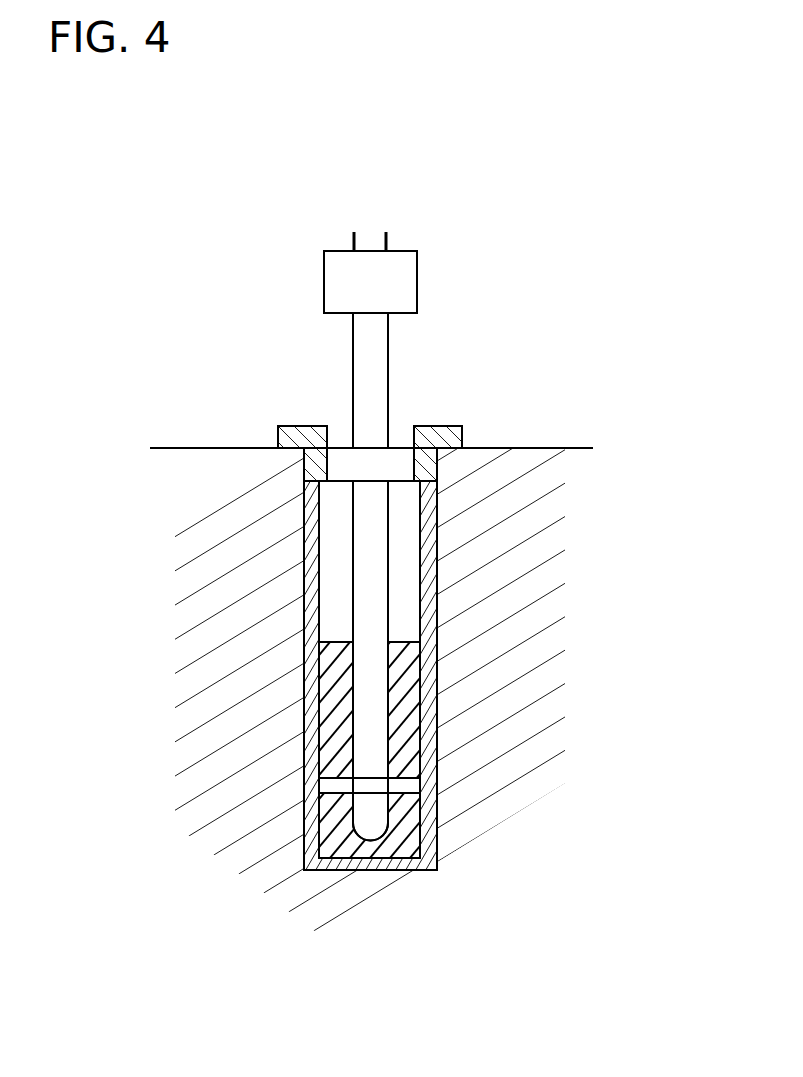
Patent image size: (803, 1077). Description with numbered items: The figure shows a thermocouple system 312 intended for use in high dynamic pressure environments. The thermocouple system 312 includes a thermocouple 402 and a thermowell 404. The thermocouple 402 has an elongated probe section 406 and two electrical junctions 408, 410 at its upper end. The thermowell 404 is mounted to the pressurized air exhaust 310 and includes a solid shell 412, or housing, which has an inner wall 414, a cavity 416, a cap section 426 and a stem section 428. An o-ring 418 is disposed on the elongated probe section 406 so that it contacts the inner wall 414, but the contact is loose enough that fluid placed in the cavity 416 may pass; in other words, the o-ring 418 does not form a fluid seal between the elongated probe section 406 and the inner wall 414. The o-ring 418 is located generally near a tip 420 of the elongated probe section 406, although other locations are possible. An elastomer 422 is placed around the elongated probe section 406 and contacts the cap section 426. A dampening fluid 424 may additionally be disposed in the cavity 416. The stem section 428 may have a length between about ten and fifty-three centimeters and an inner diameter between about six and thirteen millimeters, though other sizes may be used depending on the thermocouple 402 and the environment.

The thermocouple system 312 is at (107, 193).
The pressurized air exhaust 310 is at (193, 448).
The thermocouple 402 is at (402, 342).
The thermowell 404 is at (468, 600).
The elongated probe section 406 is at (368, 623).
The electrical junction 408 is at (353, 233).
The electrical junction 410 is at (388, 237).
The solid shell 412 is at (320, 545).
The inner wall 414 is at (415, 548).
The cavity 416 is at (410, 578).
The o-ring 418 is at (343, 795).
The tip 420 is at (373, 825).
The elastomer 422 is at (398, 450).
The dampening fluid 424 is at (407, 720).
The cap section 426 is at (298, 432).
The stem section 428 is at (303, 768).